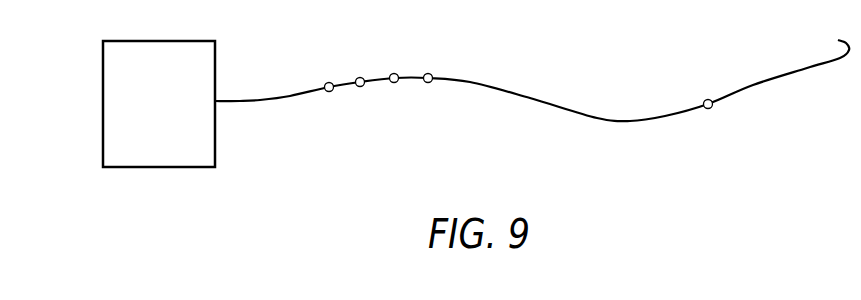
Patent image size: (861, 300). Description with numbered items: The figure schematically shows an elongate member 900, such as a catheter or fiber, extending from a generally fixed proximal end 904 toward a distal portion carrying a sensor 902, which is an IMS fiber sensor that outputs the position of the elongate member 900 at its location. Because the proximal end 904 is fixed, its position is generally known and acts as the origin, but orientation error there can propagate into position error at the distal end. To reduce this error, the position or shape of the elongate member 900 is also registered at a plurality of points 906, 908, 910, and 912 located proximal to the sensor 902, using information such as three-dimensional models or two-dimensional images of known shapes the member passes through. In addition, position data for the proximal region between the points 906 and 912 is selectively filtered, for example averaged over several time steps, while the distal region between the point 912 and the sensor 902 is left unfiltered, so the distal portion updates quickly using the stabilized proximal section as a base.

The elongate member 900 is at (517, 92).
The sensor 902 is at (717, 108).
The proximal end 904 is at (222, 112).
The additional point 906 is at (337, 92).
The point 908 is at (369, 85).
The point 910 is at (403, 82).
The point 912 is at (437, 82).